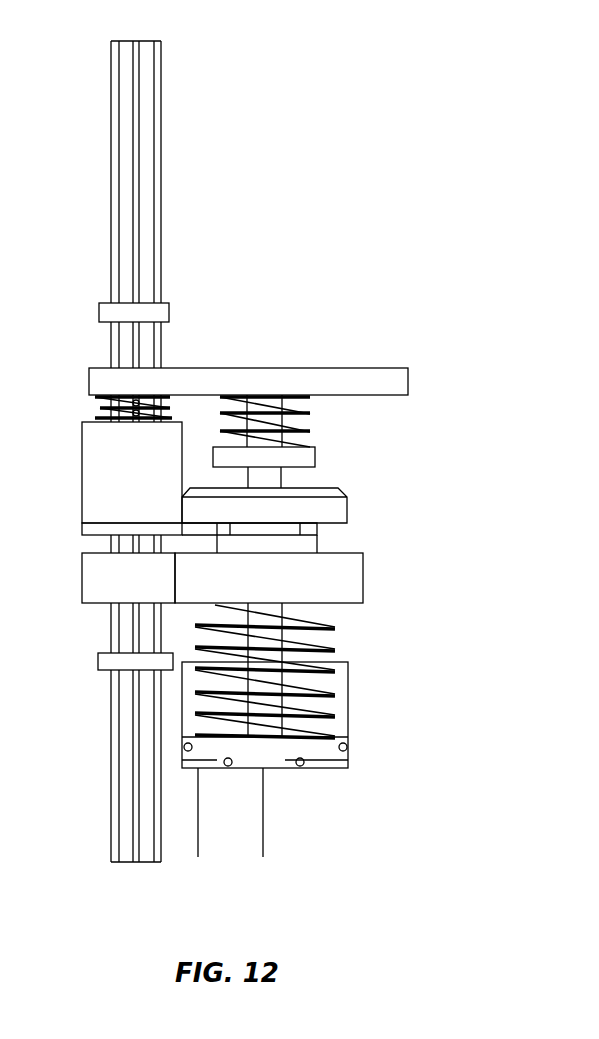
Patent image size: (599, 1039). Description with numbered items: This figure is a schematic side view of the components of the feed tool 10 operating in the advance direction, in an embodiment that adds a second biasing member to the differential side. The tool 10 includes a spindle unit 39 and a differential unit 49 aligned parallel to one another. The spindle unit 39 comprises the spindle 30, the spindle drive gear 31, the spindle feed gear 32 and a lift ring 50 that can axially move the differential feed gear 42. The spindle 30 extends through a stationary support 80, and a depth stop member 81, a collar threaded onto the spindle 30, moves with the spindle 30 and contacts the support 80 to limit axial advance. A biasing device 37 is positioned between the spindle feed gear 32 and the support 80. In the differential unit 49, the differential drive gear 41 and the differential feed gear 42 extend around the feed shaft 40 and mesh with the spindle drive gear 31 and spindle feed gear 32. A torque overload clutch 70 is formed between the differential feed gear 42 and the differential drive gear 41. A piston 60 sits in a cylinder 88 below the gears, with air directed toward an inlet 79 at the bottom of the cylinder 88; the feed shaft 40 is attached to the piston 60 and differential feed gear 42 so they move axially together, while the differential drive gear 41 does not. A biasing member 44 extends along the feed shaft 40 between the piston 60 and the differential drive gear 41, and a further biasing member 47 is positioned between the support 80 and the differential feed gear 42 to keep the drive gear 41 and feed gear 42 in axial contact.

The tool 10 is at (290, 128).
The spindle 30 is at (127, 122).
The spindle drive gear 31 is at (88, 580).
The spindle feed gear 32 is at (97, 493).
The biasing device 37 is at (110, 413).
The spindle unit 39 is at (68, 368).
The feed shaft 40 is at (330, 645).
The differential drive gear 41 is at (355, 573).
The differential feed gear 42 is at (340, 505).
The biasing member 44 is at (330, 712).
The biasing member 47 is at (300, 410).
The differential unit 49 is at (333, 345).
The lift ring 50 is at (90, 528).
The piston 60 is at (292, 750).
The torque overload clutch 70 is at (312, 548).
The inlet 79 is at (275, 772).
The support 80 is at (395, 383).
The depth stop member 81 is at (158, 313).
The cylinder 88 is at (348, 752).